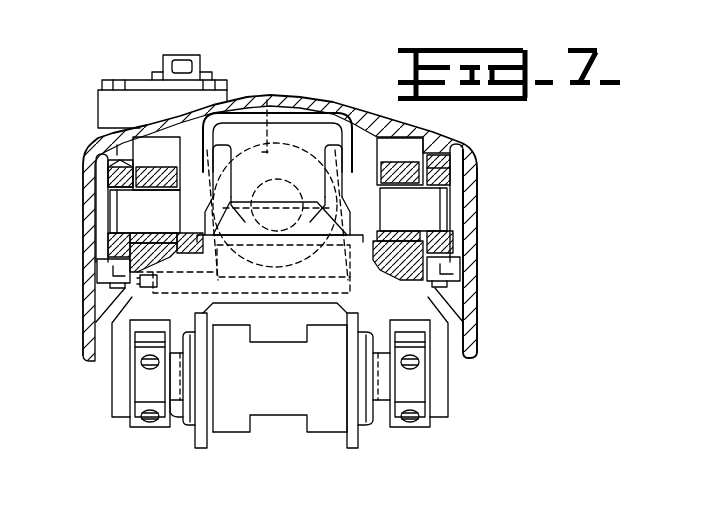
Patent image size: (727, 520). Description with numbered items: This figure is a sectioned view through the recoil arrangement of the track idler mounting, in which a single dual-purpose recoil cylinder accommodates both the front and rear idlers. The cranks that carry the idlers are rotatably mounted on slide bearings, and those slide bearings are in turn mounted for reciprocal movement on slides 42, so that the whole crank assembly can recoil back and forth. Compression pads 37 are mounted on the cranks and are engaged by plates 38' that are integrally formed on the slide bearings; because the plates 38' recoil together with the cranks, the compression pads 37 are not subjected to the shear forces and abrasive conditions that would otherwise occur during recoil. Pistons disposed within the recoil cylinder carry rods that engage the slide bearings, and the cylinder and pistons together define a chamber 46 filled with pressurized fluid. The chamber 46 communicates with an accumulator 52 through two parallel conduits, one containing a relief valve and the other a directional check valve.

The accumulator 52 is at (110, 112).
The slide 42 is at (456, 147).
The chamber 46 is at (265, 104).
The plate 38' is at (152, 212).
The compression pad 37 is at (313, 243).